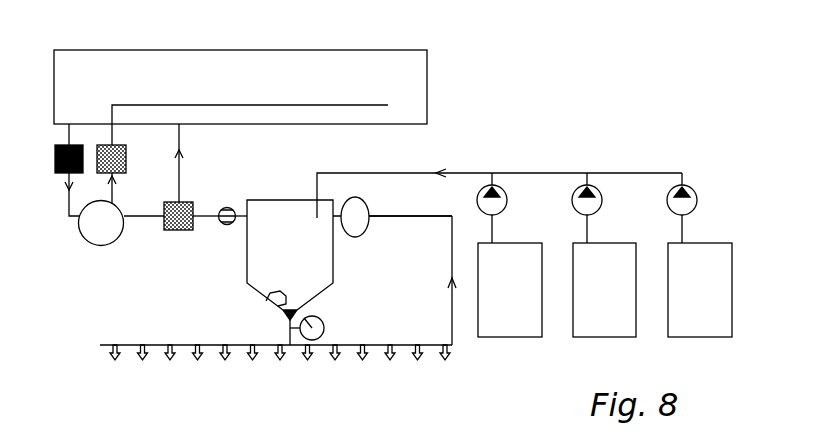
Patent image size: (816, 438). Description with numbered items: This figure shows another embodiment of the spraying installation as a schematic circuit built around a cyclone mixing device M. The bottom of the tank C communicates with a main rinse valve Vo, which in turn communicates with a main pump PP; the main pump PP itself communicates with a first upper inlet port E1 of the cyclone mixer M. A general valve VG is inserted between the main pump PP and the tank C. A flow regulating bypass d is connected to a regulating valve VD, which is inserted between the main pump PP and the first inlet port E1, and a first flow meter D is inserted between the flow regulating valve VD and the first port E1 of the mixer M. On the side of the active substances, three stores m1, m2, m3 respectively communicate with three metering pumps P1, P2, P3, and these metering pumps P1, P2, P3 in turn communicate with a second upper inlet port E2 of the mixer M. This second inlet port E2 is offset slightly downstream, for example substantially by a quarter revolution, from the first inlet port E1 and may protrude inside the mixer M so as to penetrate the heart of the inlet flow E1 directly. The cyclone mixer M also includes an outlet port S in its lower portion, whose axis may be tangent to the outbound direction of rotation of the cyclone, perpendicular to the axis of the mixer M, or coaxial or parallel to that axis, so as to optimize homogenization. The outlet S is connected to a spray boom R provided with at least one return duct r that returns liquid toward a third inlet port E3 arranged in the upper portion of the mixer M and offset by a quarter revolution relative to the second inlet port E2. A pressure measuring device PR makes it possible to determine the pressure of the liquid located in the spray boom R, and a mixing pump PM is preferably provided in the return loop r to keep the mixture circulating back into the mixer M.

The tank C is at (198, 50).
The main rinse valve Vo is at (56, 160).
The general valve VG is at (126, 160).
The flow regulating bypass d is at (179, 137).
The main pump PP is at (122, 223).
The regulating valve VD is at (179, 230).
The first flow meter D is at (227, 207).
The first upper inlet port E1 is at (240, 216).
The second upper inlet port E2 is at (315, 212).
The cyclone mixing device M is at (290, 272).
The mixing pump PM is at (392, 217).
The third inlet port E3 is at (337, 216).
The outlet port S is at (266, 301).
The pressure measuring device PR is at (322, 320).
The spray boom R is at (130, 345).
The return duct r is at (452, 243).
The metering pump P1 is at (507, 203).
The metering pump P2 is at (602, 203).
The metering pump P3 is at (697, 203).
The active substance store m1 is at (510, 302).
The active substance store m2 is at (604, 302).
The active substance store m3 is at (700, 302).